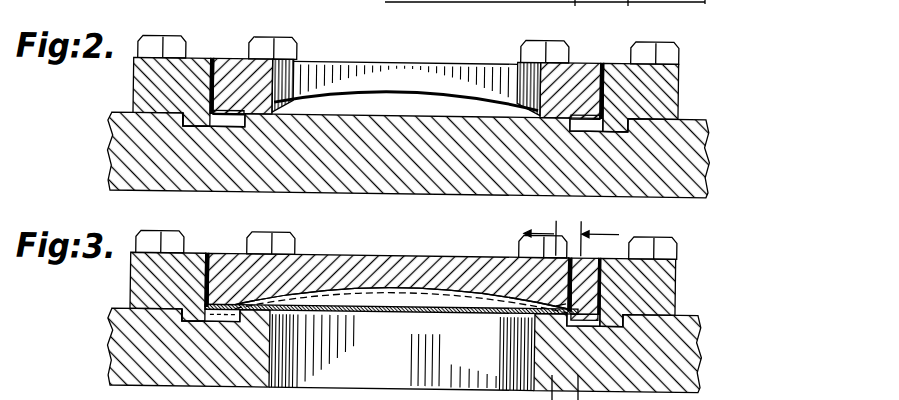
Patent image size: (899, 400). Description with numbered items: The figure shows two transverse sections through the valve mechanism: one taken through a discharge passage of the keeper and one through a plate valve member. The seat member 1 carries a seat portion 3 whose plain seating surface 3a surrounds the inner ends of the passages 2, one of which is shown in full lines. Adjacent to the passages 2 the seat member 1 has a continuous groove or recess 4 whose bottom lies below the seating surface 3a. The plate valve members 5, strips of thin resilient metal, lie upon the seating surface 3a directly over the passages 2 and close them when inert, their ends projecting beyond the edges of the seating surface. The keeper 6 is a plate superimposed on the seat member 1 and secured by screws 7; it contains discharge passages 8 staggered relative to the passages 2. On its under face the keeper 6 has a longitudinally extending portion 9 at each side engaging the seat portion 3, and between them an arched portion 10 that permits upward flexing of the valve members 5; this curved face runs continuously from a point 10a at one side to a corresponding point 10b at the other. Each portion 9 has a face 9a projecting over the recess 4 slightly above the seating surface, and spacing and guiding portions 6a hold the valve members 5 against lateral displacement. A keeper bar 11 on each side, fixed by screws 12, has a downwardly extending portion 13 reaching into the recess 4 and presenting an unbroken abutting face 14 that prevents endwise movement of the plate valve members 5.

In FIG. 2, the seat member 1 is at (692, 149).
In FIG. 3, the seat member 1 is at (690, 346).
In FIG. 3, the passages 2 is at (402, 361).
In FIG. 3, the seat portion 3 is at (292, 330).
In FIG. 3, the seating surface 3a is at (553, 308).
In FIG. 2, the recess 4 is at (222, 112).
In FIG. 3, the recess 4 is at (220, 386).
In FIG. 3, the plate valve members 5 is at (456, 317).
In FIG. 2, the keeper 6 is at (572, 68).
In FIG. 3, the keeper 6 is at (354, 256).
In FIG. 3, the spacing and guiding portions 6a is at (268, 302).
In FIG. 2, the screws 7 is at (262, 40).
In FIG. 3, the screws 7 is at (256, 232).
In FIG. 2, the discharge passages 8 is at (376, 70).
In FIG. 2, the longitudinally extending portion 9 is at (288, 98).
In FIG. 3, the longitudinally extending portion 9 is at (397, 327).
In FIG. 2, the face 9a is at (644, 23).
In FIG. 3, the face 9a is at (581, 205).
In FIG. 2, the arched portion 10 is at (375, 91).
In FIG. 3, the arched portion 10 is at (413, 306).
In FIG. 3, the curve starting point 10a is at (214, 300).
In FIG. 3, the curve ending point 10b is at (560, 296).
In FIG. 2, the keeper bar 11 is at (143, 71).
In FIG. 3, the keeper bar 11 is at (130, 264).
In FIG. 2, the screws 12 is at (173, 42).
In FIG. 3, the screws 12 is at (144, 230).
In FIG. 2, the downwardly extending portion 13 is at (193, 118).
In FIG. 3, the downwardly extending portion 13 is at (185, 312).
In FIG. 2, the abutting face 14 is at (192, 72).
In FIG. 3, the abutting face 14 is at (188, 298).